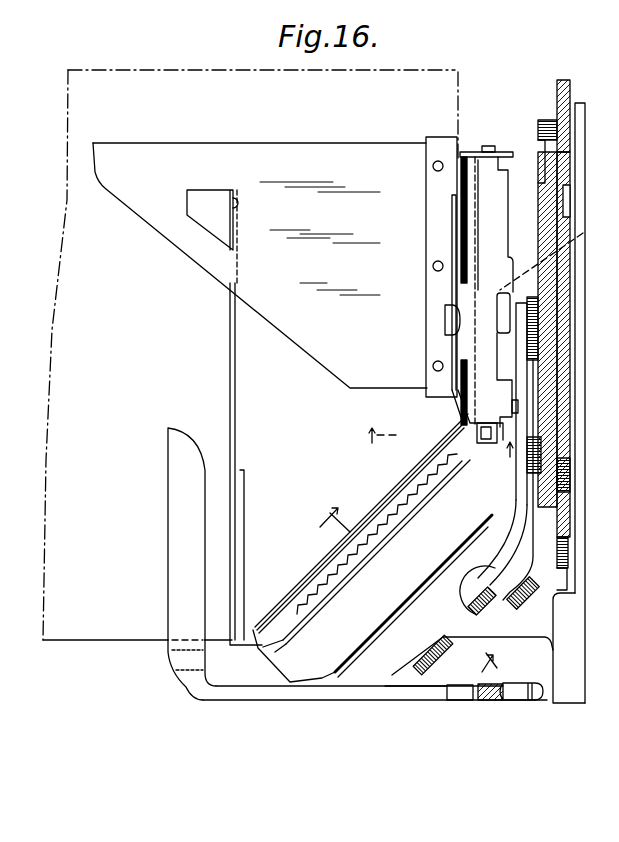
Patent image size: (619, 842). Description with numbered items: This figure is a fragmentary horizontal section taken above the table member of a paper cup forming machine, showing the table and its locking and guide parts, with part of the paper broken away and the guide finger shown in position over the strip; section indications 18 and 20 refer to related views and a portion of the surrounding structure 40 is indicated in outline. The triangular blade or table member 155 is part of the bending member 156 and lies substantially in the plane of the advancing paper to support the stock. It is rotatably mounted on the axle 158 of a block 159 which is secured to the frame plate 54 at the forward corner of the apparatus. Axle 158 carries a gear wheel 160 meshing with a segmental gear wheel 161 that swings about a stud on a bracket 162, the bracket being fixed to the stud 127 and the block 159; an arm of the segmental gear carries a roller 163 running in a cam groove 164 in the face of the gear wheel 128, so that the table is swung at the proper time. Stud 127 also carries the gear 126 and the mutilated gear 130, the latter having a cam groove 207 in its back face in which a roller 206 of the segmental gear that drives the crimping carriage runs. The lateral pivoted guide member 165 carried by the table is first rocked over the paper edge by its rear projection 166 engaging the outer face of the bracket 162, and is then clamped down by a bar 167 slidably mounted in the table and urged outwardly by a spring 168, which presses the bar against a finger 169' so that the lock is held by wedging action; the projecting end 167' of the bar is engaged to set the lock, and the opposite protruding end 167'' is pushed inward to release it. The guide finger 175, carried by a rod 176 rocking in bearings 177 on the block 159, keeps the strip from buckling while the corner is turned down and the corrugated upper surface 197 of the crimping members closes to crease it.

The panel 40 is at (125, 630).
The frame plate 54 is at (578, 553).
The gear 126 is at (547, 120).
The stud 127 is at (513, 333).
The mutilated gear 128 is at (557, 377).
The mutilated gear 130 is at (570, 87).
The table member 155 is at (338, 148).
The bending member 156 is at (482, 527).
The axle 158 is at (493, 687).
The block 159 is at (530, 663).
The gear wheel 160 is at (443, 653).
The segmental gear wheel 161 is at (487, 617).
The bracket 162 is at (538, 325).
The roller 163 is at (541, 443).
The cam groove 164 is at (545, 173).
The lateral pivoted guide member 165 is at (485, 240).
The projection 166 is at (518, 407).
The bar 167 is at (445, 308).
The projecting end of bar 167' is at (379, 521).
The protruding end of bar 167'' is at (482, 263).
The spring 168 is at (453, 198).
The finger 169' is at (558, 259).
The guide finger 175 is at (177, 508).
The rod 176 is at (330, 692).
The bearings 177 is at (385, 700).
The upper surface of crimping members 197 is at (393, 523).
The roller 206 is at (570, 478).
The cam groove 207 is at (570, 213).
The section line 18 is at (413, 590).
The section line 20 is at (431, 453).